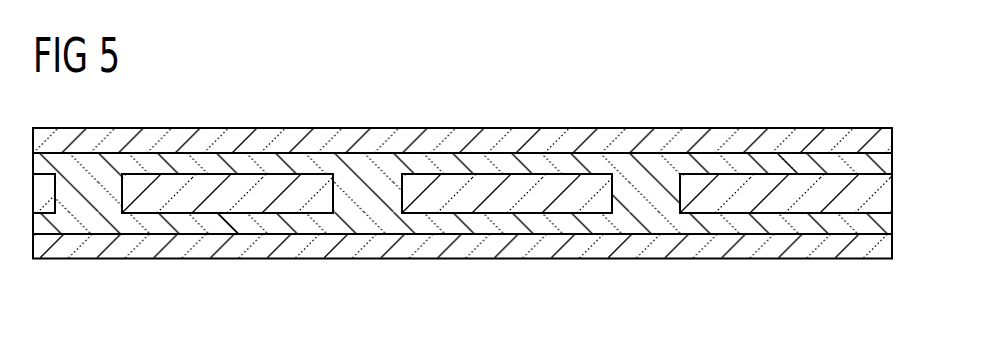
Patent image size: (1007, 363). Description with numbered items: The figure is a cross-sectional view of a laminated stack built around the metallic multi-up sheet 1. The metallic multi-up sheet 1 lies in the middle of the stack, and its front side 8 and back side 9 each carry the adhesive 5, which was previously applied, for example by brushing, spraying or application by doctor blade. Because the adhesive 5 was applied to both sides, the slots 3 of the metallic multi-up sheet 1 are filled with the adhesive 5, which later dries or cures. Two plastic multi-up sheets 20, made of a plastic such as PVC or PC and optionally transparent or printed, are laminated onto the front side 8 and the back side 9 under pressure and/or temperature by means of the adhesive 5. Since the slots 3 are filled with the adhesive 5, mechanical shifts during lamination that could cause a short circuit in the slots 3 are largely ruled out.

The metallic multi-up sheet 1 is at (882, 195).
The slots 3 is at (89, 197).
The adhesive 5 is at (97, 166).
The front side 8 is at (791, 161).
The back side 9 is at (217, 214).
The plastic multi-up sheet 20 is at (893, 131).